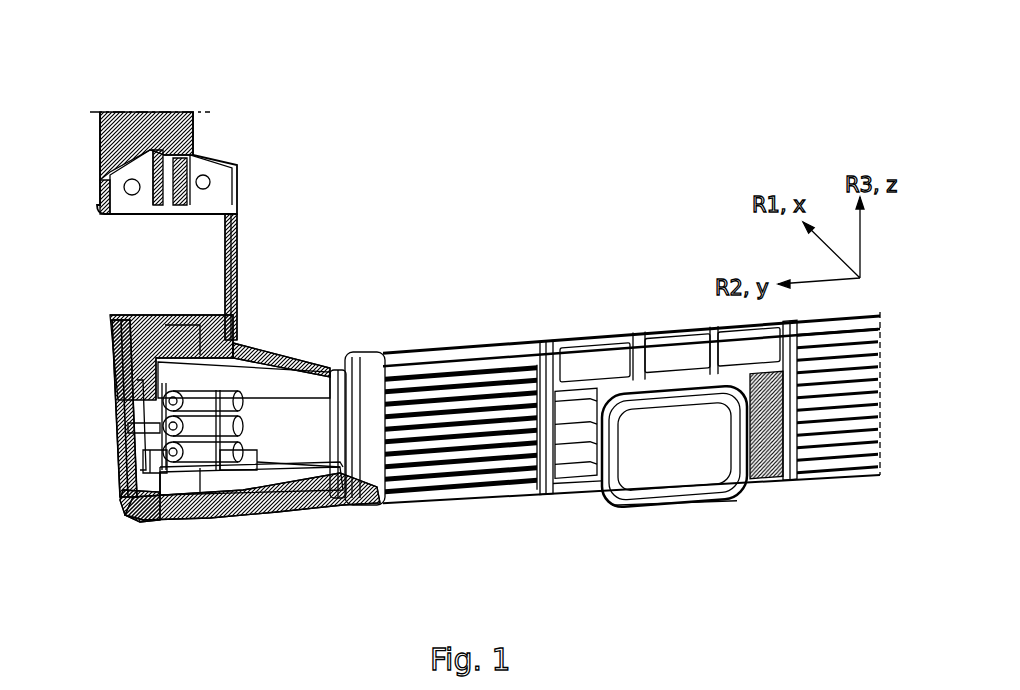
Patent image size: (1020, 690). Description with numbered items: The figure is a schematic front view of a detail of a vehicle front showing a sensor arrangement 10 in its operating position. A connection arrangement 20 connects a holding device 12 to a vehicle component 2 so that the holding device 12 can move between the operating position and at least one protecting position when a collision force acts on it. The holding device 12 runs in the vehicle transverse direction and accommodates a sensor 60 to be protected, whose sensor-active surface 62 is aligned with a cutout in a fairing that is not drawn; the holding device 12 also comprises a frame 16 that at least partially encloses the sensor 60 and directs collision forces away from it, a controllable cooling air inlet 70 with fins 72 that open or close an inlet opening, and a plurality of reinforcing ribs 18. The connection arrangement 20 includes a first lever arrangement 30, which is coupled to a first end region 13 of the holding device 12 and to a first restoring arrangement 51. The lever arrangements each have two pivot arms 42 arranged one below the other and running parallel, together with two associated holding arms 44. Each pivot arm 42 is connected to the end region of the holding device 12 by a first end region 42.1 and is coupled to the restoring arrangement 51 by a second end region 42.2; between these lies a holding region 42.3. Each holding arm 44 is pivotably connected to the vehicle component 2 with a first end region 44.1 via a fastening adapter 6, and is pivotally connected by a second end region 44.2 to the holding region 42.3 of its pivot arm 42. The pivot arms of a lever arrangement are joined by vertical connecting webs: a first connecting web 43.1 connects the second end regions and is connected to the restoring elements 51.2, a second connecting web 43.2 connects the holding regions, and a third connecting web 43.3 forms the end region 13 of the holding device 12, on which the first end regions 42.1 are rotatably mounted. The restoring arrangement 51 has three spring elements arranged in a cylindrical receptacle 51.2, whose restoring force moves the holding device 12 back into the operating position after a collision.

The sensor arrangement 10 is at (451, 314).
The holding device 12 is at (631, 402).
The connection arrangement 20 is at (229, 388).
The first lever arrangement 30 is at (282, 283).
The cooling air inlet 70 is at (458, 335).
The fins 72 is at (472, 440).
The reinforcing ribs 18 is at (562, 497).
The frame 16 is at (650, 505).
The sensor-active surface 62 is at (692, 464).
The sensor 60 is at (689, 453).
The fastening adapter 6 is at (177, 318).
The first end region of the holding arm 44.1 is at (198, 316).
The second holding arm 44 is at (242, 300).
The second pivot arm 42 is at (312, 362).
The first end region of the pivot arm 42.1 is at (342, 372).
The second end region of the pivot arm 42.2 is at (110, 322).
The holding region of the pivot arm 42.3 is at (236, 350).
The second end region of the holding arm 44.2 is at (343, 492).
The vehicle component 2 is at (112, 400).
The first connecting web 43.1 is at (156, 410).
The second connecting web 43.2 is at (247, 421).
The third connecting web 43.3 is at (257, 465).
The first end region of the holding device 13 is at (330, 435).
The restoring arrangement 51 is at (135, 426).
The cylindrical receptacle 51.2 is at (146, 460).